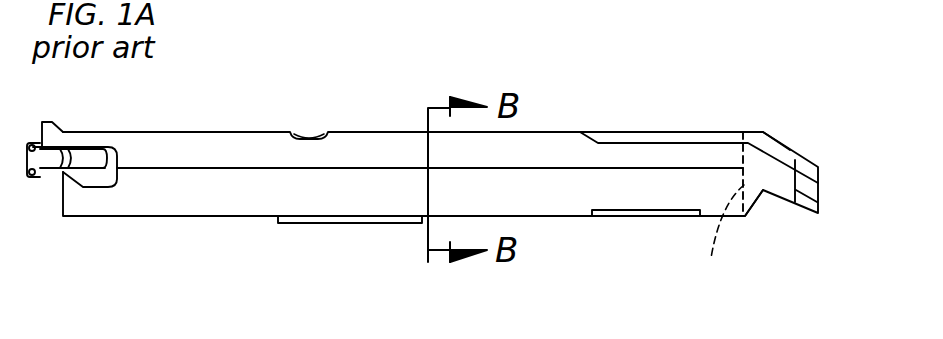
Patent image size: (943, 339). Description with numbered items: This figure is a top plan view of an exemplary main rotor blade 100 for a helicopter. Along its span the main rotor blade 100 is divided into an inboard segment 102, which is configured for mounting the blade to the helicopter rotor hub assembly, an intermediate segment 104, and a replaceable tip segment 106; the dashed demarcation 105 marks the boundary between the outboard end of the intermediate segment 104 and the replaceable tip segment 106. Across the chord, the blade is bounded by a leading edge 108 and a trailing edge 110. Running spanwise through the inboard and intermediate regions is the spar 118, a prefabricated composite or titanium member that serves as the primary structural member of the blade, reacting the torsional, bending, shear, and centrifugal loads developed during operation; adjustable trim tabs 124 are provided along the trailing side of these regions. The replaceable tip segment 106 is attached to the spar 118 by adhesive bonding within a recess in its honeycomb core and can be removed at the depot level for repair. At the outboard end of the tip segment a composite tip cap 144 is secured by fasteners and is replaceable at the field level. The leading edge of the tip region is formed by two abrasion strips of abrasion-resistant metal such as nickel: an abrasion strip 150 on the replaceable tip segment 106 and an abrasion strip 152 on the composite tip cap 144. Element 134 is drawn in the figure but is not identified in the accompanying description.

The main rotor blade 100 is at (538, 112).
The inboard segment 102 is at (80, 128).
The intermediate segment 104 is at (377, 118).
The demarcation 105 is at (723, 236).
The replaceable tip segment 106 is at (768, 222).
The leading edge 108 is at (623, 122).
The trailing edge 110 is at (168, 221).
The spar 118 is at (310, 131).
The adjustable trim tabs 124 is at (338, 226).
The groove 134 is at (672, 141).
The composite tip cap 144 is at (807, 195).
The abrasion strip 150 is at (770, 140).
The abrasion strip 152 is at (801, 152).